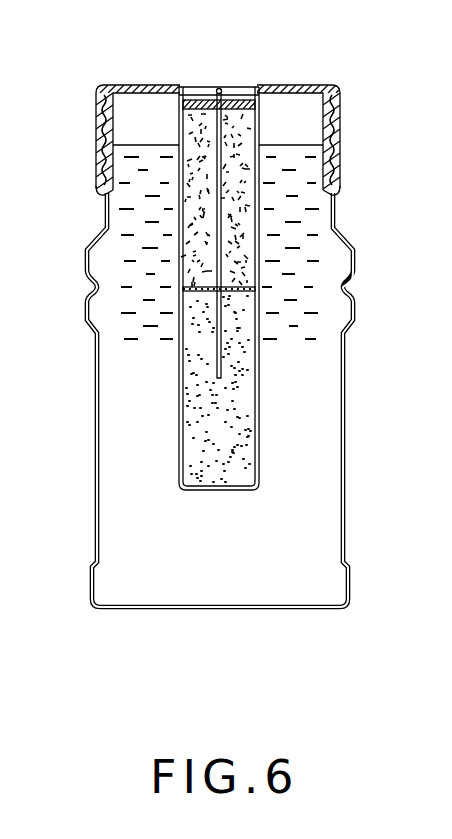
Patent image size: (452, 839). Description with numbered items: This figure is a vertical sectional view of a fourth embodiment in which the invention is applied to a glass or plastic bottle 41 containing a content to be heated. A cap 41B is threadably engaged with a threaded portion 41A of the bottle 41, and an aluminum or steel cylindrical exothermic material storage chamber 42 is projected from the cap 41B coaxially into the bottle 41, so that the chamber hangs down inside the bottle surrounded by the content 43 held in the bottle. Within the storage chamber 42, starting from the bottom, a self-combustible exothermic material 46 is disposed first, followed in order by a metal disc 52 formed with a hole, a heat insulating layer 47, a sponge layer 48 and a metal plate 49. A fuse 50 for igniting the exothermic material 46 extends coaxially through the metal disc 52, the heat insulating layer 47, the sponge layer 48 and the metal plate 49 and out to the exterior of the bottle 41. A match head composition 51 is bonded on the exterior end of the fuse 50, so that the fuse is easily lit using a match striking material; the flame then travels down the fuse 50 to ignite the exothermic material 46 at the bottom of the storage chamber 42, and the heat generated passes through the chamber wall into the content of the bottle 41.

The bottle 41 is at (345, 425).
The threaded portion 41A is at (98, 148).
The cap 41B is at (340, 92).
The exothermic material storage chamber 42 is at (262, 470).
The liquid in container 43 is at (117, 410).
The self-combustible exothermic material 46 is at (213, 475).
The heat insulating layer 47 is at (240, 247).
The sponge layer 48 is at (240, 103).
The metal plate 49 is at (197, 95).
The fuse 50 is at (220, 138).
The match head composition 51 is at (219, 89).
The metal disc 52 is at (241, 292).